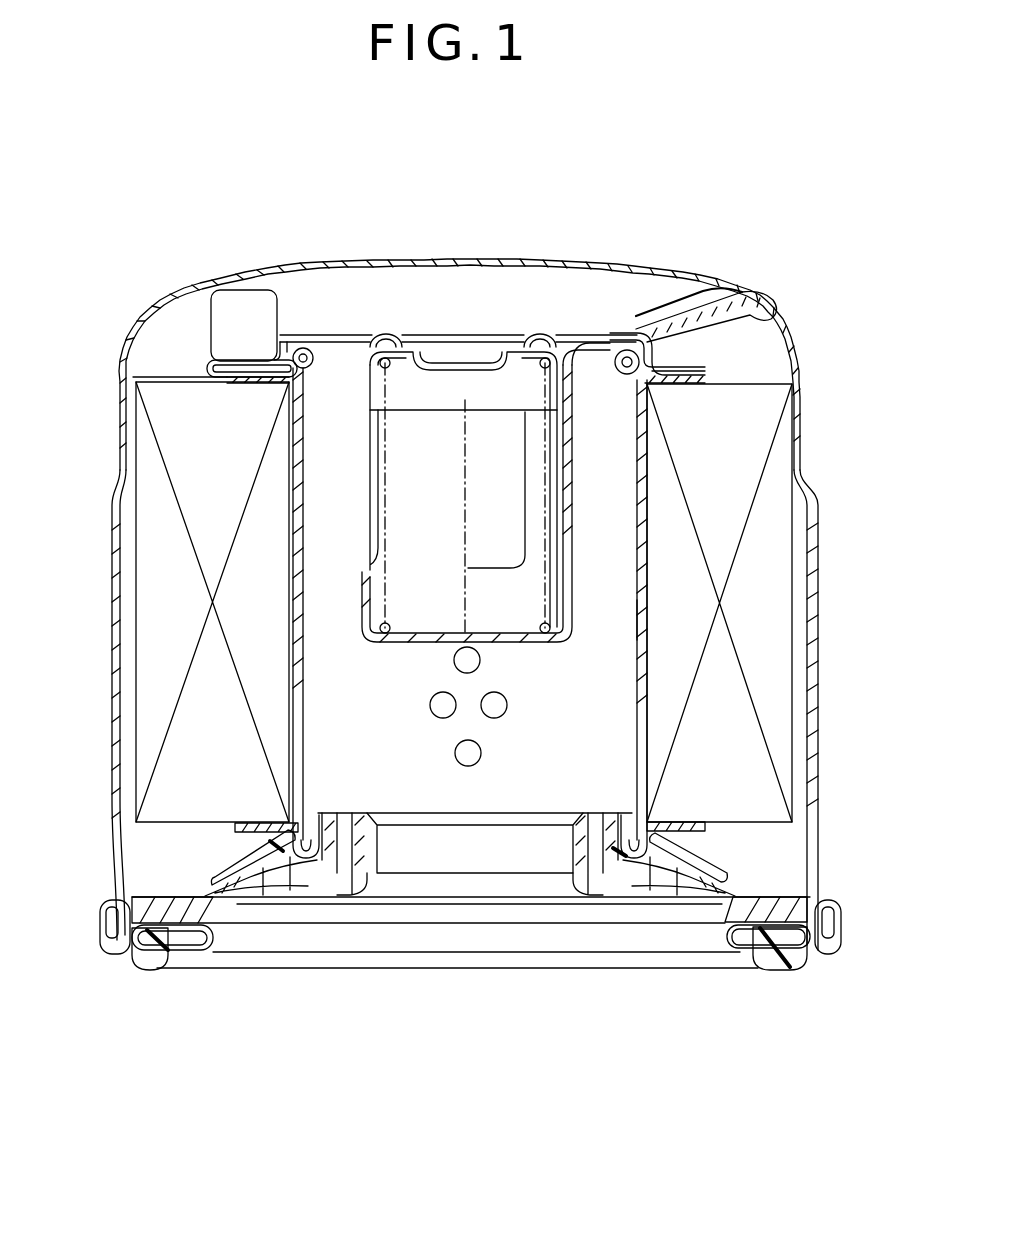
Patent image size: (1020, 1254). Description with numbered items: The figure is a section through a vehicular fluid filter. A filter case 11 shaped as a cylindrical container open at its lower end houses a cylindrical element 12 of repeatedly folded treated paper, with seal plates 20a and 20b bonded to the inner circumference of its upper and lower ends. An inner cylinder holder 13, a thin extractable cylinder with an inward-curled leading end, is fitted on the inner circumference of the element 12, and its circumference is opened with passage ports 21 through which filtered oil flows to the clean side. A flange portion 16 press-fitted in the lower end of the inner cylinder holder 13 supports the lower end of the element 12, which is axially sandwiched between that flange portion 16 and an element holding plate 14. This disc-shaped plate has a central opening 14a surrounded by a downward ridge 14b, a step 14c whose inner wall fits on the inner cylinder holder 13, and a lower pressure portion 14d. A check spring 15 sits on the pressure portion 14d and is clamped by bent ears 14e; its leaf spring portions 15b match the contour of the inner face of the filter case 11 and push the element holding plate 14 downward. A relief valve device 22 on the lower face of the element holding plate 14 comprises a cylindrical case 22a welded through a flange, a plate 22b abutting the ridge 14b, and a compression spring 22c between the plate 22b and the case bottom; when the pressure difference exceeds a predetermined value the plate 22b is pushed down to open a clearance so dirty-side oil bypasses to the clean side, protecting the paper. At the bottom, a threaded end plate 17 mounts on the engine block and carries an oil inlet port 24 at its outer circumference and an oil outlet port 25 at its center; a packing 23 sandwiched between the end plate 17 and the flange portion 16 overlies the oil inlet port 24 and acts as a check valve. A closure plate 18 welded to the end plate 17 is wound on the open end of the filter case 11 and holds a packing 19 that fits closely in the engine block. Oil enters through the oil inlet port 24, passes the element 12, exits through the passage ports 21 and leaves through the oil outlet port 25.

The filter case 11 is at (375, 268).
The element 12 is at (755, 421).
The inner cylinder holder 13 is at (650, 620).
The element holding plate 14 is at (578, 348).
The opening 14a is at (479, 333).
The ridge 14b is at (389, 334).
The step 14c is at (662, 350).
The pressure portion 14d is at (704, 357).
The ears 14e is at (210, 364).
The check spring 15 is at (658, 298).
The leaf spring portions 15b is at (243, 294).
The flange portion 16 is at (655, 840).
The end plate 17 is at (603, 890).
The closure plate 18 is at (763, 948).
The packing 19 is at (808, 947).
The seal plate 20a is at (690, 398).
The seal plate 20b is at (697, 822).
The passage ports 21 is at (463, 760).
The relief valve device 22 is at (374, 459).
The case 22a is at (573, 590).
The plate 22b is at (457, 367).
The compression spring 22c is at (542, 578).
The packing 23 is at (306, 873).
The oil inlet port 24 is at (673, 890).
The oil outlet port 25 is at (508, 865).